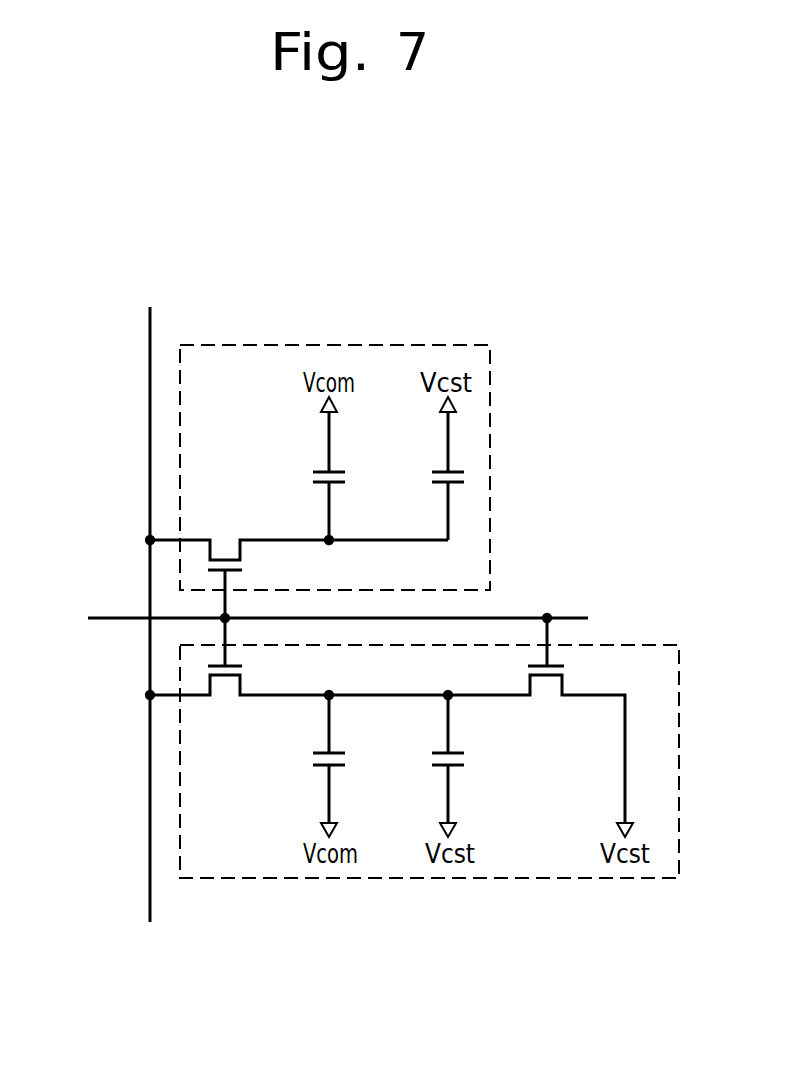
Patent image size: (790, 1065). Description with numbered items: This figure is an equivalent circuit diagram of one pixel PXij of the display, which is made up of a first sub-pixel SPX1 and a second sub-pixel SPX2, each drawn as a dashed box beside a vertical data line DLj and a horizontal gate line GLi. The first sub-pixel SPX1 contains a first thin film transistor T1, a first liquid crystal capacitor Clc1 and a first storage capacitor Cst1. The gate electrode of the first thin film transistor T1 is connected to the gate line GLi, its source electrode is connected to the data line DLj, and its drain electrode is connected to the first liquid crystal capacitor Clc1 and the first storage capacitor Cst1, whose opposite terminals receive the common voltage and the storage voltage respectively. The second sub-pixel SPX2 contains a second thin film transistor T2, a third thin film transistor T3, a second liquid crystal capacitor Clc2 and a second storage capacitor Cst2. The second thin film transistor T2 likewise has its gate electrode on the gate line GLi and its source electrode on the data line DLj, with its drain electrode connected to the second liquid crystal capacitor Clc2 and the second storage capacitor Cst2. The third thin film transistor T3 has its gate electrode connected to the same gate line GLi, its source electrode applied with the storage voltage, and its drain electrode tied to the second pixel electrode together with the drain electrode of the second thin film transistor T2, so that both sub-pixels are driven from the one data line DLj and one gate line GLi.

The data line DLj is at (147, 598).
The gate line GLi is at (315, 619).
The pixel PXij is at (687, 514).
The first sub-pixel SPX1 is at (490, 525).
The second sub-pixel SPX2 is at (627, 645).
The first thin film transistor T1 is at (238, 564).
The second thin film transistor T2 is at (238, 673).
The third thin film transistor T3 is at (540, 726).
The first liquid crystal capacitor Clc1 is at (298, 471).
The first storage capacitor Cst1 is at (396, 468).
The second liquid crystal capacitor Clc2 is at (298, 764).
The second storage capacitor Cst2 is at (396, 764).